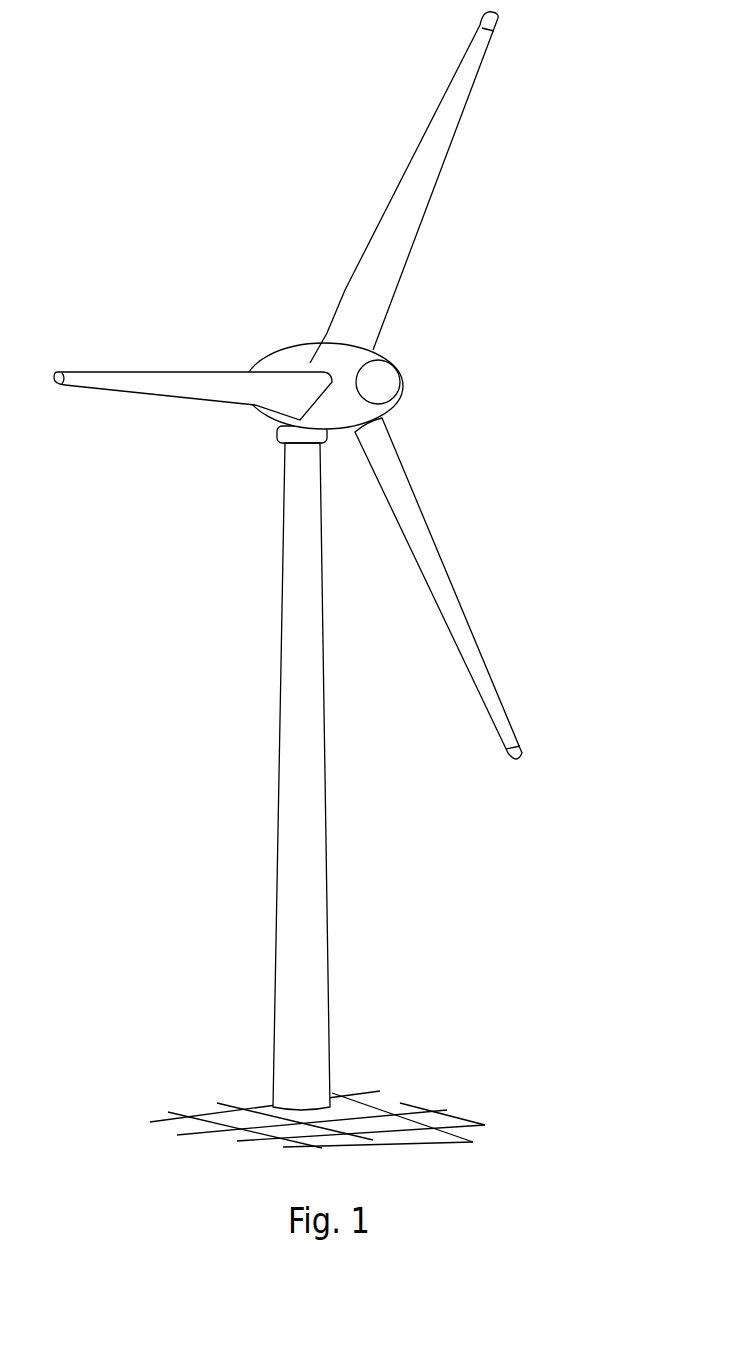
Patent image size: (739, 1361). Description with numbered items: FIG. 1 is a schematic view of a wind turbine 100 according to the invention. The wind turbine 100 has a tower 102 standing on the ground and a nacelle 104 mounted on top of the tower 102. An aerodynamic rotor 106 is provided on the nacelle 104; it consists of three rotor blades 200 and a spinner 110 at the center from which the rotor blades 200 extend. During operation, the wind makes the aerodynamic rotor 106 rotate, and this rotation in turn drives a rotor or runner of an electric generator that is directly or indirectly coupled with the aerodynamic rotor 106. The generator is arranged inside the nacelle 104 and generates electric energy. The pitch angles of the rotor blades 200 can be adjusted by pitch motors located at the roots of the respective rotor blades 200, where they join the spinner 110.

The wind turbine 100 is at (320, 580).
The tower 102 is at (313, 850).
The nacelle 104 is at (298, 362).
The aerodynamic rotor 106 is at (320, 385).
The spinner 110 is at (383, 383).
The rotor blade 200 is at (438, 145).